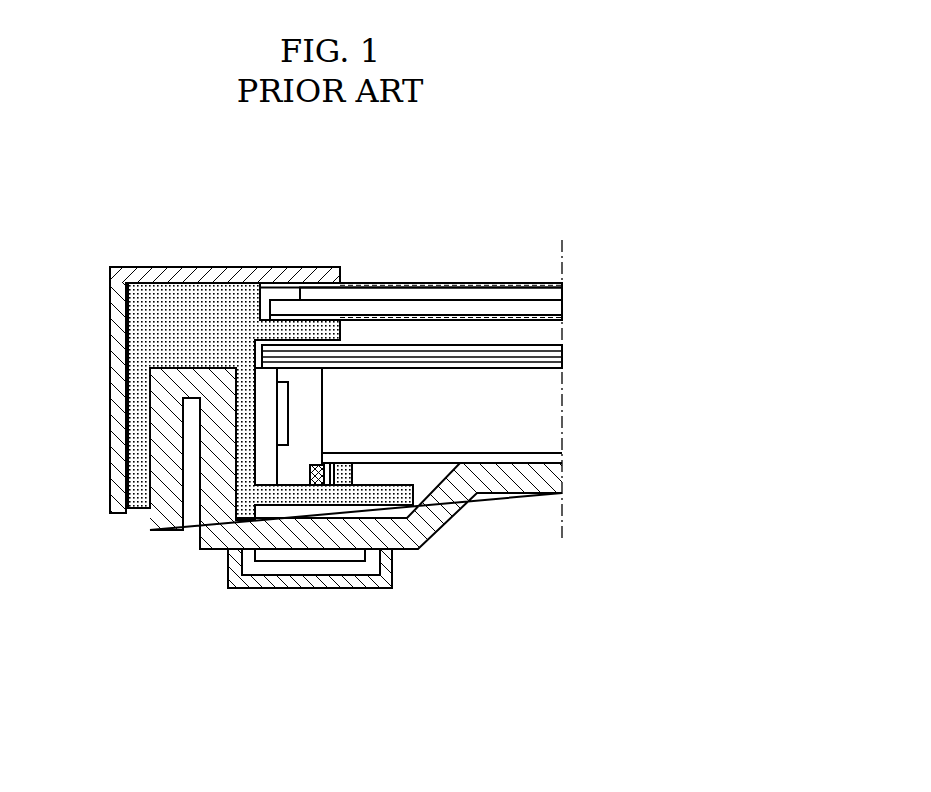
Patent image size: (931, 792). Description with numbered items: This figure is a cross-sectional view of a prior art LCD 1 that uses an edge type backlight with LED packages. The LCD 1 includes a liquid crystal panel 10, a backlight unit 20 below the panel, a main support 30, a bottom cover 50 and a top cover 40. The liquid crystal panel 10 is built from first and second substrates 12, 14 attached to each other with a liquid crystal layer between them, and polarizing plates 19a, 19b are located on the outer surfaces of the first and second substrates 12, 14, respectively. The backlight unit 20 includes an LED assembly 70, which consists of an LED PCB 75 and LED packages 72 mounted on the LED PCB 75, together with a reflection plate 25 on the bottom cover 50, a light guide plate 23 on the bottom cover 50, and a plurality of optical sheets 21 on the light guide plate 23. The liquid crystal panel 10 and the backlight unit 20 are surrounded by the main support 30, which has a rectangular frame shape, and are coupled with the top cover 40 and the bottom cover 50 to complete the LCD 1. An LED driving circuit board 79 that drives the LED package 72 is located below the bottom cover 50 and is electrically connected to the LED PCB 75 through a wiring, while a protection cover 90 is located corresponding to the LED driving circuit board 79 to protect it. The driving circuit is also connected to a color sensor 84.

The LCD 1 is at (545, 183).
The liquid crystal panel 10 is at (411, 256).
The first substrate 12 is at (482, 310).
The second substrate 14 is at (453, 293).
The polarizing plate 19a is at (408, 320).
The polarizing plate 19b is at (375, 285).
The backlight unit 20 is at (322, 568).
The optical sheets 21 is at (342, 370).
The light guide plate 23 is at (373, 433).
The reflection plate 25 is at (442, 592).
The main support 30 is at (147, 322).
The top cover 40 is at (215, 275).
The bottom cover 50 is at (497, 478).
The LED assembly 70 is at (232, 531).
The LED package 72 is at (283, 418).
The LED PCB 75 is at (263, 468).
The LED driving circuit board 79 is at (268, 561).
The color sensor 84 is at (253, 522).
The protection cover 90 is at (329, 500).